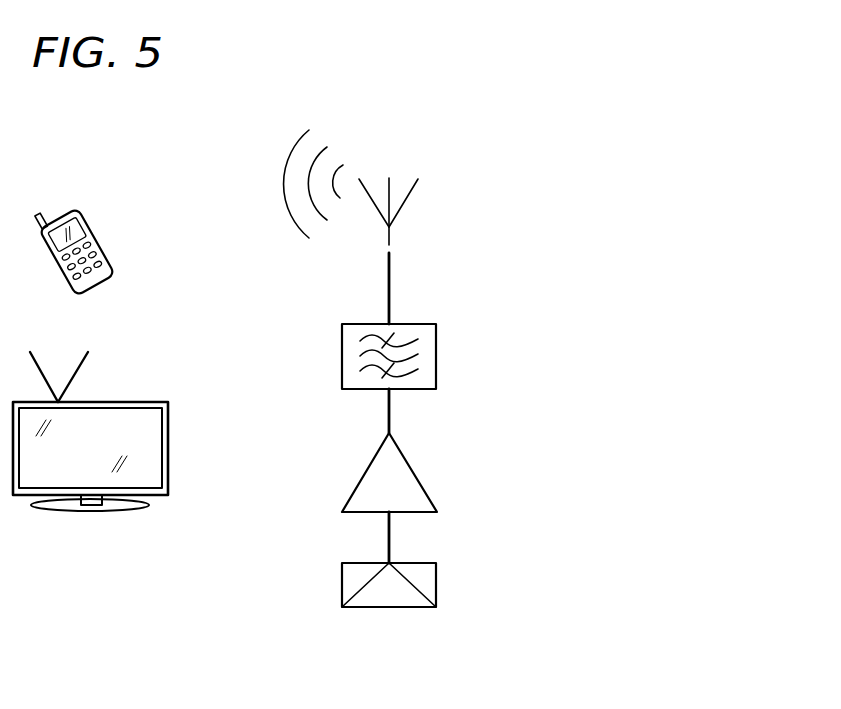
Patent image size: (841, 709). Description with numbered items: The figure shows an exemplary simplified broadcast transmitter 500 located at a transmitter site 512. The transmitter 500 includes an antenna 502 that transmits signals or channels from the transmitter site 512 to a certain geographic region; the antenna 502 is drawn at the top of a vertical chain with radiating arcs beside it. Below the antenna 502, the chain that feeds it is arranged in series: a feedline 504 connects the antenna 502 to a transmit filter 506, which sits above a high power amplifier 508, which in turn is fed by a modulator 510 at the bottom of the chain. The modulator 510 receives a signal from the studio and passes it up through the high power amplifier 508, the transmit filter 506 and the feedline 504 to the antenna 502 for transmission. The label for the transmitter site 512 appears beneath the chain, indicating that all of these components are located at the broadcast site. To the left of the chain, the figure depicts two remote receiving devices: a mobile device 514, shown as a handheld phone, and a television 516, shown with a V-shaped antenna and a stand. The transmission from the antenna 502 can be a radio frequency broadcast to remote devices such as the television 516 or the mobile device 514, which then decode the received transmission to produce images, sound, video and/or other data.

The broadcast transmitter 500 is at (494, 148).
The antenna 502 is at (412, 195).
The feedline 504 is at (389, 283).
The transmit filter 506 is at (436, 355).
The high power amplifier 508 is at (417, 477).
The modulator 510 is at (436, 587).
The transmitter site 512 is at (475, 680).
The mobile device 514 is at (97, 228).
The television 516 is at (168, 443).